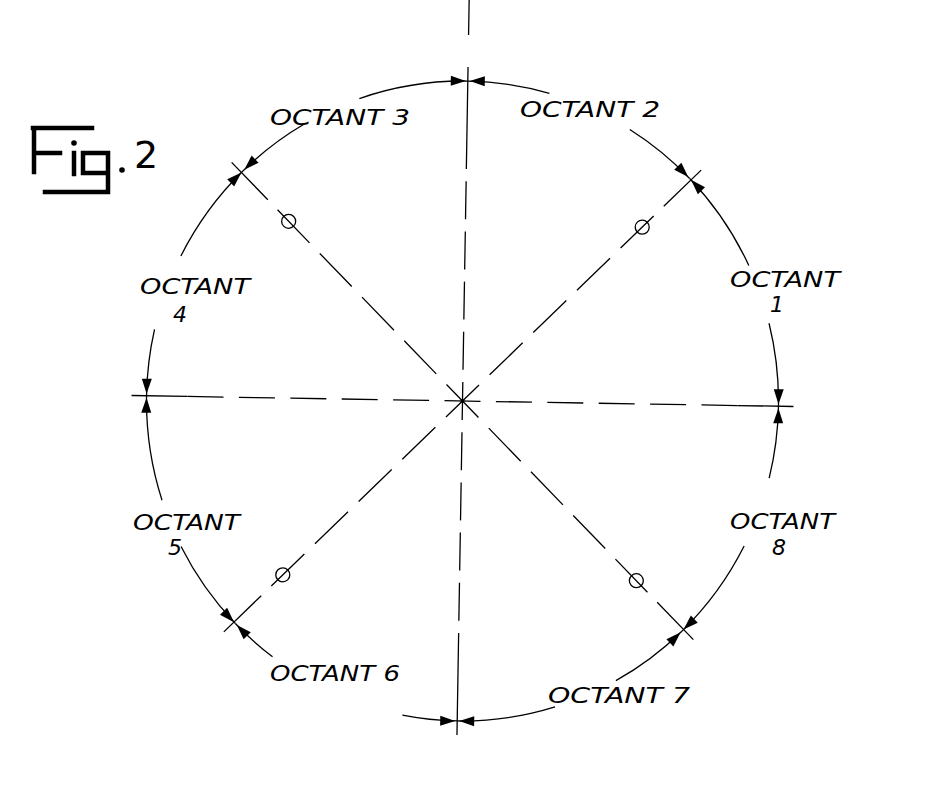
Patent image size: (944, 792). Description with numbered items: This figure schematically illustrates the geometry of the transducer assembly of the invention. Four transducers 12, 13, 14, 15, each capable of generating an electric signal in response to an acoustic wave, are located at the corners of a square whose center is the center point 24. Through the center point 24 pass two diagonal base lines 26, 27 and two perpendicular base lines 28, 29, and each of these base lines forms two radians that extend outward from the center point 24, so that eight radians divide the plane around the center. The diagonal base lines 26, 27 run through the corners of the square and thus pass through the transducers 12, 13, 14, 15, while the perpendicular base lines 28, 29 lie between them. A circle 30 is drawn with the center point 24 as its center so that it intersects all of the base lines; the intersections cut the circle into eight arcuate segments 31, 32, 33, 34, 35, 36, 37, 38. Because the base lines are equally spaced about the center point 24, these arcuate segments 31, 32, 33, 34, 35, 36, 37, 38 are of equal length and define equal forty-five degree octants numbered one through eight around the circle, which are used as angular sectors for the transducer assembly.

The transducer 12 is at (647, 233).
The transducer 13 is at (295, 213).
The transducer 14 is at (281, 571).
The transducer 15 is at (640, 580).
The center point 24 is at (470, 398).
The diagonal base line 26 is at (353, 285).
The diagonal base line 27 is at (347, 525).
The perpendicular base line 28 is at (283, 396).
The perpendicular base line 29 is at (465, 266).
The circle 30 is at (665, 149).
The arcuate segment 31 is at (777, 362).
The arcuate segment 32 is at (511, 88).
The arcuate segment 33 is at (381, 90).
The arcuate segment 34 is at (200, 219).
The arcuate segment 35 is at (152, 466).
The arcuate segment 36 is at (406, 716).
The arcuate segment 37 is at (640, 668).
The arcuate segment 38 is at (727, 580).